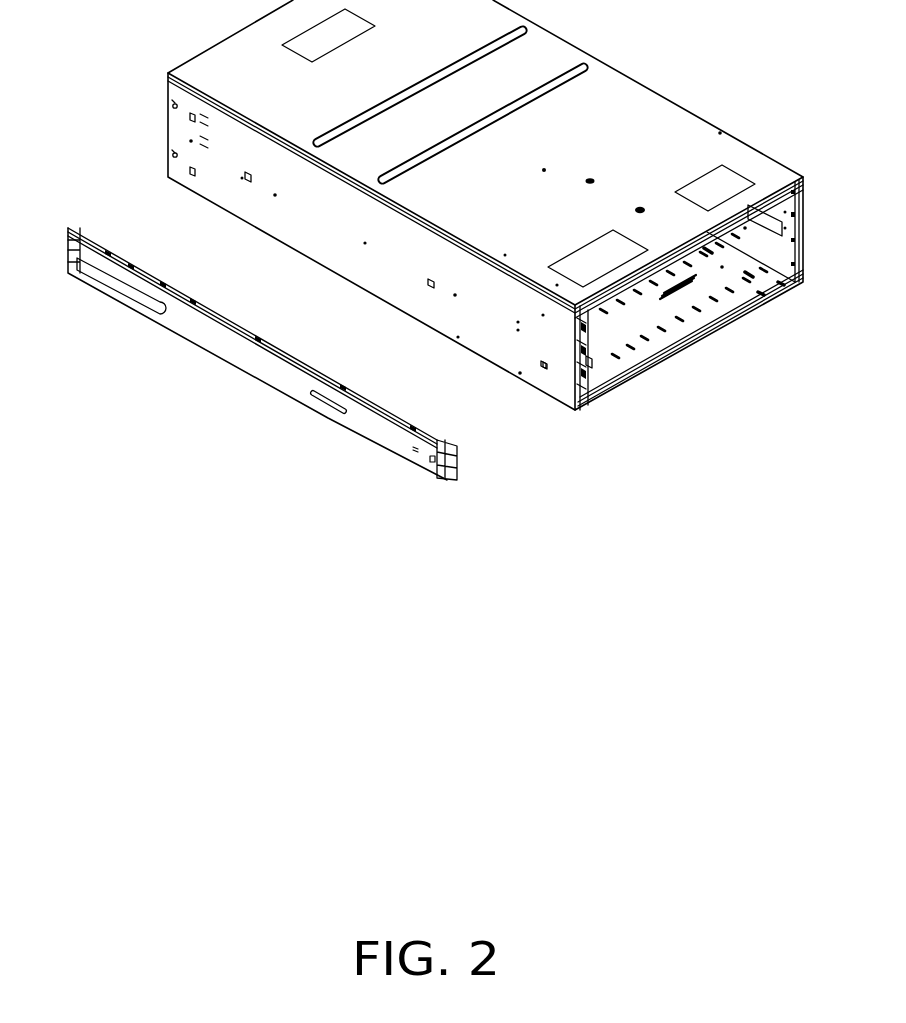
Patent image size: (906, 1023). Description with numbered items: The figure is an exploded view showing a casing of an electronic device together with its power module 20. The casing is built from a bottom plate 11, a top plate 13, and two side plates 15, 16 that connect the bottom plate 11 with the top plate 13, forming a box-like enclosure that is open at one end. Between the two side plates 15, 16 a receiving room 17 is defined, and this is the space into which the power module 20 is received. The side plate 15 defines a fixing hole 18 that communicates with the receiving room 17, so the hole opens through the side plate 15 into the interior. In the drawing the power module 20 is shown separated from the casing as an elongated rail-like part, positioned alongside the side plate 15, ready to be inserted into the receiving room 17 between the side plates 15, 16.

The bottom plate 11 is at (732, 322).
The top plate 13 is at (660, 122).
The side plate 15 is at (428, 307).
The side plate 16 is at (592, 360).
The receiving room 17 is at (582, 373).
The fixing hole 18 is at (542, 366).
The power module 20 is at (387, 432).